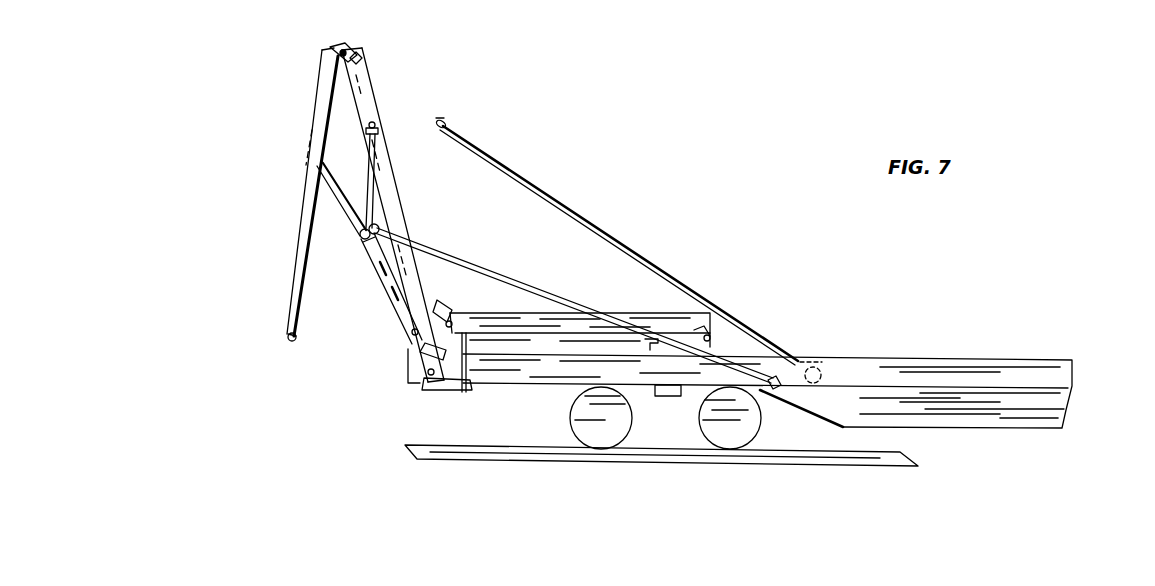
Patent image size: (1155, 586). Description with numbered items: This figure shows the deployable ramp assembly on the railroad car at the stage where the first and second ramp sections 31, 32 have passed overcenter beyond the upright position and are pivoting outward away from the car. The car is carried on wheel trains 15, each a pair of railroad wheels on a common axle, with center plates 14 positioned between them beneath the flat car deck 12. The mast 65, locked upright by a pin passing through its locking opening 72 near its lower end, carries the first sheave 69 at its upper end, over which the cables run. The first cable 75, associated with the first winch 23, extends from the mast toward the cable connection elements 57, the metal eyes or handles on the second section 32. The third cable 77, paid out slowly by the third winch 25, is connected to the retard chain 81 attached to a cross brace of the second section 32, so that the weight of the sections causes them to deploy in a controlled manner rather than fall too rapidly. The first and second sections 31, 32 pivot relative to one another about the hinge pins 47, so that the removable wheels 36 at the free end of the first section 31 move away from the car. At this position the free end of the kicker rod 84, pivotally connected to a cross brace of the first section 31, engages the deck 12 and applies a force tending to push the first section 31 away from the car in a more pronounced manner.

The car deck 12 is at (797, 359).
The center plates 14 is at (670, 396).
The wheel trains 15 is at (722, 444).
The first winch 23 is at (780, 386).
The third winch 25 is at (824, 378).
The first ramp section 31 is at (315, 138).
The second ramp section 32 is at (390, 168).
The removable wheels 36 is at (296, 338).
The hinge pins 47 is at (349, 54).
The cable connection elements 57 is at (376, 126).
The mast 65 is at (398, 312).
The first sheave 69 is at (379, 227).
The locking opening 72 is at (458, 384).
The first cable 75 is at (471, 262).
The third cable 77 is at (566, 208).
The retard chain 81 is at (445, 122).
The kicker rod 84 is at (361, 234).